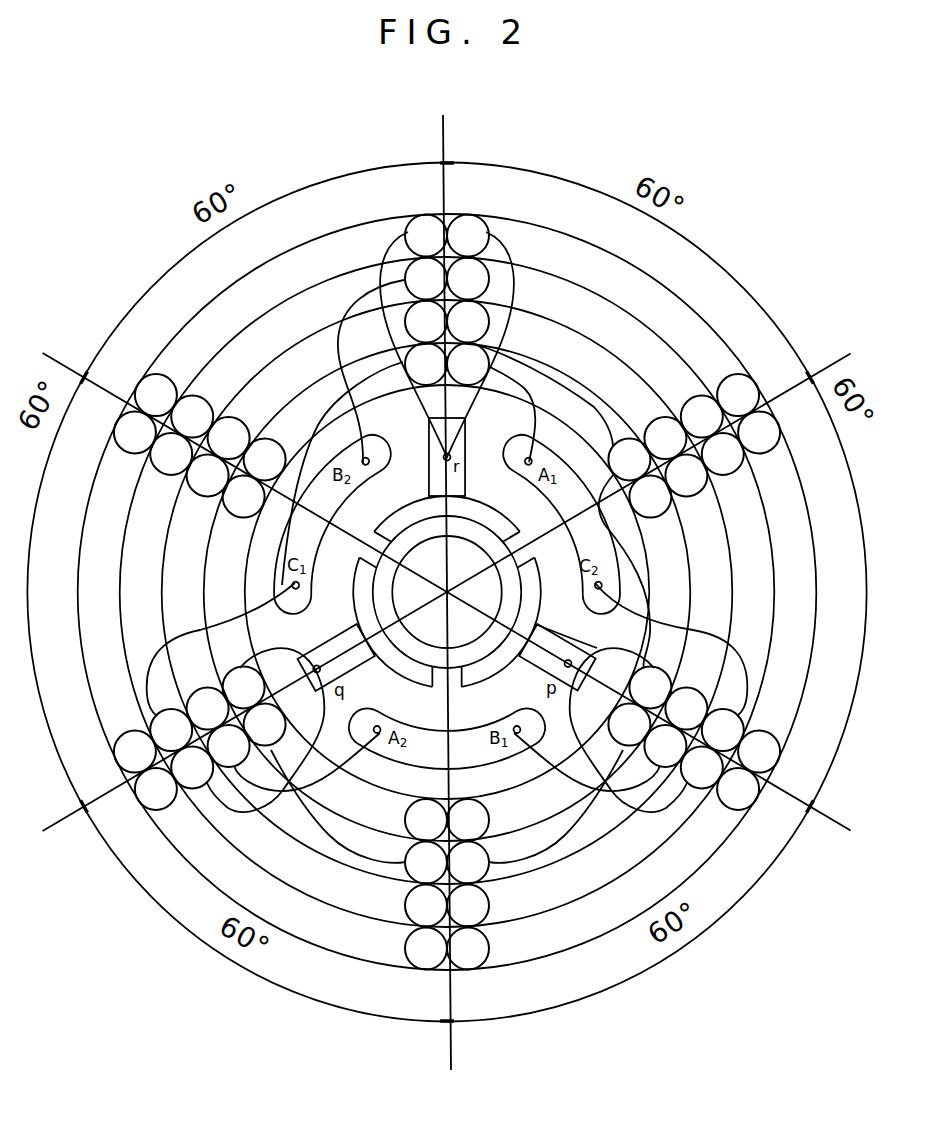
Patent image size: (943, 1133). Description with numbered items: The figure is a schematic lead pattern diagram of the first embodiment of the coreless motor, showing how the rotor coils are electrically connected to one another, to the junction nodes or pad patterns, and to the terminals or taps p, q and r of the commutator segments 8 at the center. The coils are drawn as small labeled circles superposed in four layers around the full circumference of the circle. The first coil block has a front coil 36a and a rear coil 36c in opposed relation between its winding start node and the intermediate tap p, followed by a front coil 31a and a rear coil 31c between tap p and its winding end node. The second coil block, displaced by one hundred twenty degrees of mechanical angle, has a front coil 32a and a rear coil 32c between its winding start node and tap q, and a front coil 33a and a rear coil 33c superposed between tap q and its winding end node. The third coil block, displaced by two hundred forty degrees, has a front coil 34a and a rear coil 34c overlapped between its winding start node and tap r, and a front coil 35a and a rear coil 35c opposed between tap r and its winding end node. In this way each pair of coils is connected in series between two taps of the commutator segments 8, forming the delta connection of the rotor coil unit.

The commutator segments 8 is at (447, 554).
The front coil 31a is at (429, 794).
The rear coil 31c is at (465, 391).
The front coil 32a is at (428, 826).
The rear coil 32c is at (465, 359).
The front coil 33a is at (309, 494).
The rear coil 33c is at (585, 690).
The front coil 34a is at (291, 483).
The rear coil 34c is at (603, 701).
The front coil 35a is at (613, 494).
The rear coil 35c is at (280, 690).
The front coil 36a is at (559, 525).
The rear coil 36c is at (335, 658).